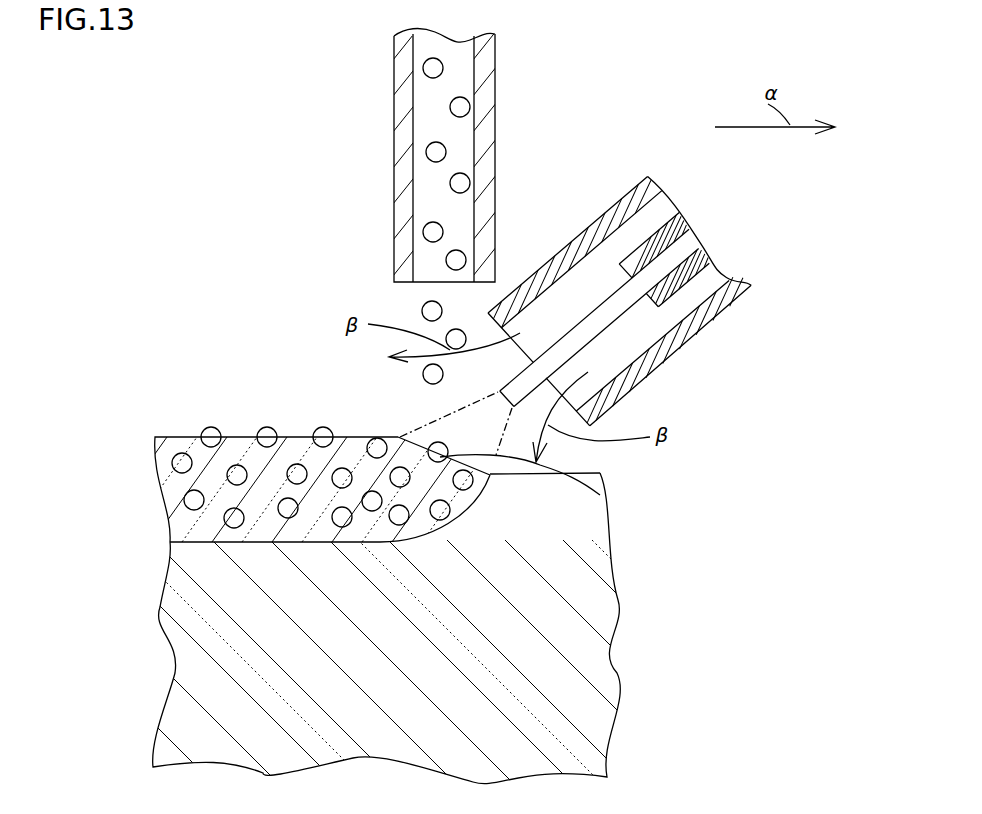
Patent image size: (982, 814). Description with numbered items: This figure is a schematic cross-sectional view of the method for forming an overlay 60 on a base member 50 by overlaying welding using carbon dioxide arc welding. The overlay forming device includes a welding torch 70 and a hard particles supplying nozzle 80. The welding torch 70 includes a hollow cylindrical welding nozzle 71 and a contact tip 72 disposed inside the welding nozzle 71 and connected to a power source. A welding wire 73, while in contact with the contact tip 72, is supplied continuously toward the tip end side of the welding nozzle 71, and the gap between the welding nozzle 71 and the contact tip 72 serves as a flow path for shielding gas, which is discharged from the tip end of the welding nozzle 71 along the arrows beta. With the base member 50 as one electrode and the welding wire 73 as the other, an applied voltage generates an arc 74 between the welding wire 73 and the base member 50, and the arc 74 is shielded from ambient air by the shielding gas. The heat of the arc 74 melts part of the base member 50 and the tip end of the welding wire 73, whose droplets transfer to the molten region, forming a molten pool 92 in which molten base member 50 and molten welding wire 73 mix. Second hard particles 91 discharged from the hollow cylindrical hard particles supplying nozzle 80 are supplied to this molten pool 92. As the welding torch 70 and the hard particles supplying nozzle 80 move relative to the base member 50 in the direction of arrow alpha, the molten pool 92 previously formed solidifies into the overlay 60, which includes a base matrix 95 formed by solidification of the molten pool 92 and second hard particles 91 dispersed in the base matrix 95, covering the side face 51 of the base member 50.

The base member 50 is at (645, 604).
The side face 51 is at (568, 473).
The overlay 60 is at (324, 436).
The welding torch 70 is at (640, 301).
The welding nozzle 71 is at (619, 300).
The contact tip 72 is at (668, 260).
The welding wire 73 is at (601, 317).
The arc 74 is at (473, 427).
The hard particles supplying nozzle 80 is at (482, 140).
The second hard particles 91 is at (428, 70).
The molten pool 92 is at (600, 495).
The base matrix 95 is at (292, 445).